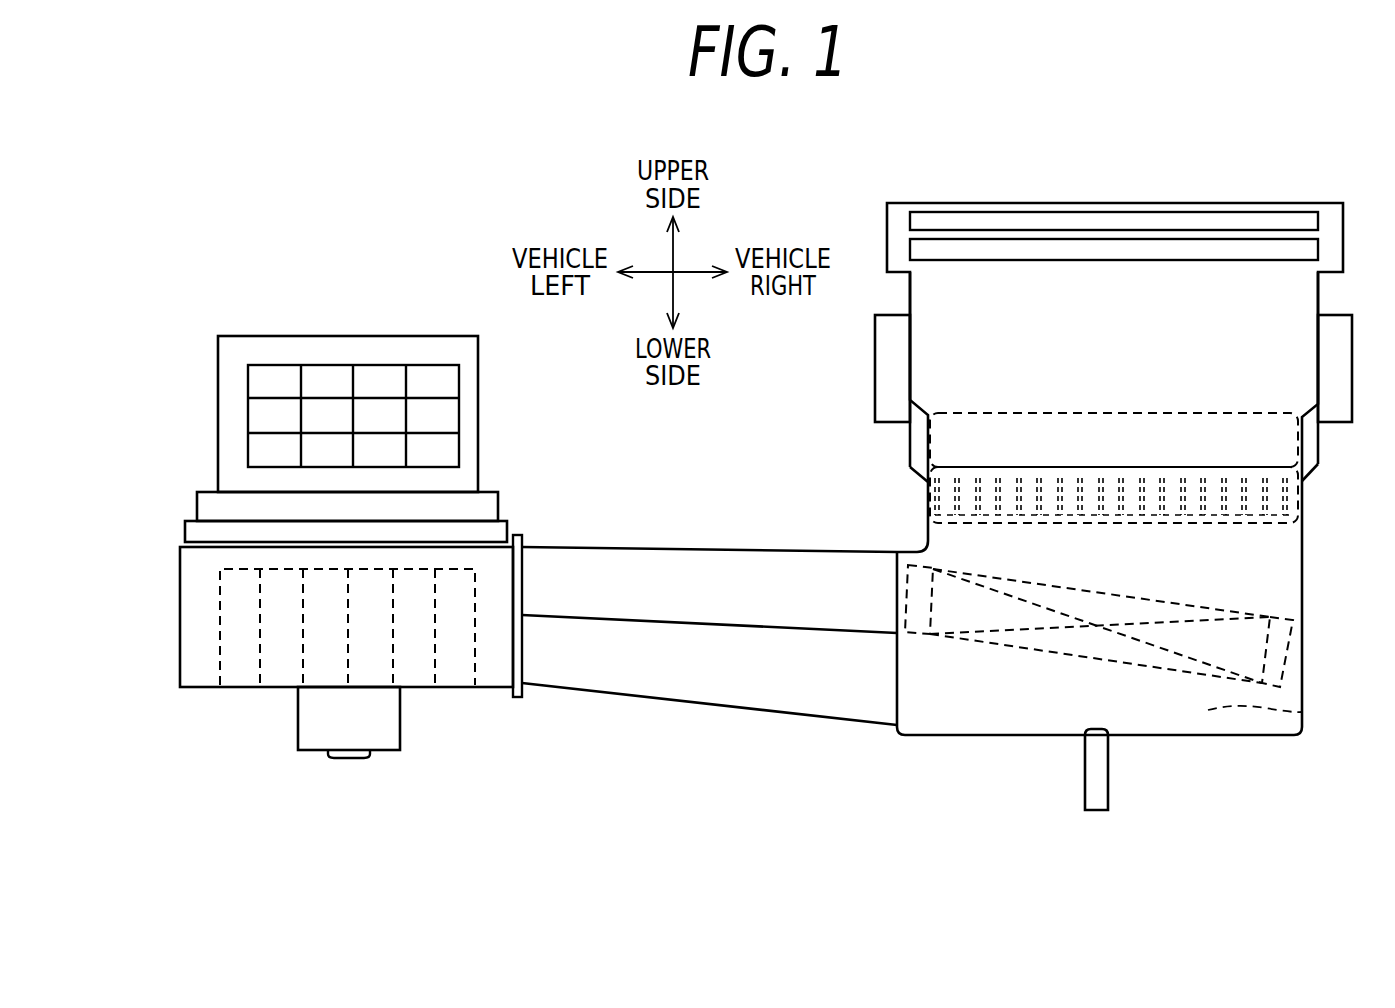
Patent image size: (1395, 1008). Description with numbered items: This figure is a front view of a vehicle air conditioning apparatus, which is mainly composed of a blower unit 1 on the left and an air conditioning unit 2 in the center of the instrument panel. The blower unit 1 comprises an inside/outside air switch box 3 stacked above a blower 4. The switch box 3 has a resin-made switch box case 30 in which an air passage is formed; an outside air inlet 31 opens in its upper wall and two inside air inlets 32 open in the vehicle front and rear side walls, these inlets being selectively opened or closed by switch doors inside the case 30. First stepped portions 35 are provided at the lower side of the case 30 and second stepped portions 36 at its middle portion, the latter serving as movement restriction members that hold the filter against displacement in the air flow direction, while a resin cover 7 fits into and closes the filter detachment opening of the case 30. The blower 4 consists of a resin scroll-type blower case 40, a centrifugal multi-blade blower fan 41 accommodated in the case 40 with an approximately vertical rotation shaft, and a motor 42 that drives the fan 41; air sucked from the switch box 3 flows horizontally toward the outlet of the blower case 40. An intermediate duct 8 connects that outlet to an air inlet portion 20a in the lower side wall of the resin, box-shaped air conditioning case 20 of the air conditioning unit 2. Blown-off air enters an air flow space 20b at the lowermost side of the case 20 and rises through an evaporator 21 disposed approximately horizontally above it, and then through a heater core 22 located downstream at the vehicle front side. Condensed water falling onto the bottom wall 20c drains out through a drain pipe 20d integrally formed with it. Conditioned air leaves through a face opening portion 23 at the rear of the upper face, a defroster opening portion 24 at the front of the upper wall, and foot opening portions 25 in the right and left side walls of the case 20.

The blower unit 1 is at (127, 348).
The air conditioning unit 2 is at (1316, 497).
The inside/outside air switch box 3 is at (214, 370).
The blower 4 is at (176, 572).
The cover 7 is at (480, 506).
The intermediate duct 8 is at (597, 680).
The air conditioning case 20 is at (1304, 537).
The air inlet portion 20a is at (897, 653).
The air flow space 20b is at (1302, 712).
The bottom wall 20c is at (1232, 737).
The drain pipe 20d is at (1093, 747).
The evaporator 21 is at (1250, 642).
The heater core 22 is at (930, 494).
The face opening portion 23 is at (1133, 250).
The defroster opening portion 24 is at (1042, 222).
The foot opening portion 25 is at (885, 366).
The switch box case 30 is at (470, 390).
The outside air inlet 31 is at (266, 336).
The inside air inlet 32 is at (377, 384).
The first stepped portion 35 is at (507, 522).
The second stepped portion 36 is at (490, 492).
The blower case 40 is at (492, 672).
The blower fan 41 is at (260, 645).
The motor 42 is at (375, 733).